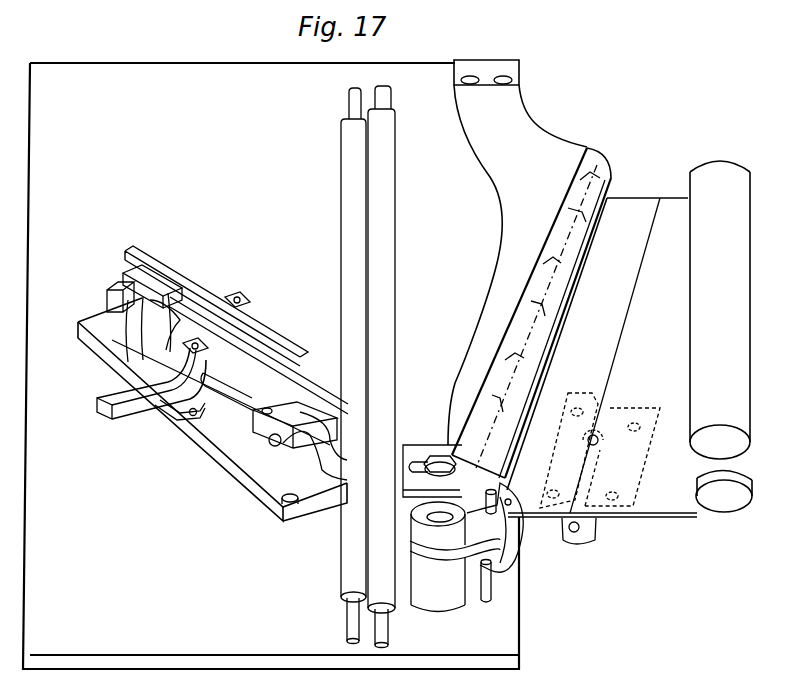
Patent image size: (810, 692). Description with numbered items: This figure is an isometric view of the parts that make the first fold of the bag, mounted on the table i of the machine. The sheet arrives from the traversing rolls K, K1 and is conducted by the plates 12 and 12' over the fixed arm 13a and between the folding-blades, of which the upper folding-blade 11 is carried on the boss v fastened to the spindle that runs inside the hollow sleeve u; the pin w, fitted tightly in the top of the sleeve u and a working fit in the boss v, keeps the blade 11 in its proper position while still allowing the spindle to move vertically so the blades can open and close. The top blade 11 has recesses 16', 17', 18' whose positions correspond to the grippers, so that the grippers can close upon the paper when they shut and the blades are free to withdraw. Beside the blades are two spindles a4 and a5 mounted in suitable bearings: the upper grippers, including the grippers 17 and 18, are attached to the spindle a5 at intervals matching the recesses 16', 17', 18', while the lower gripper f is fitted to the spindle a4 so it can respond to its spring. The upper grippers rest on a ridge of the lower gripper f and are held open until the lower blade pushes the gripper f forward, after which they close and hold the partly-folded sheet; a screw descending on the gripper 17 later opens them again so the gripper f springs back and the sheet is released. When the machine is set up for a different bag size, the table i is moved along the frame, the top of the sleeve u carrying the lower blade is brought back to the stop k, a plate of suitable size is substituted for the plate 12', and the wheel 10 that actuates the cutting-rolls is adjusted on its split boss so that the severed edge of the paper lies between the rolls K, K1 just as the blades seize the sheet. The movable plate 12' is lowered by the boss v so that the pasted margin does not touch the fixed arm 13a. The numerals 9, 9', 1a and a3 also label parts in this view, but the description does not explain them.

The table i is at (271, 366).
The guide rod 9 is at (353, 366).
The guide rod 9' is at (381, 367).
The wheel 10 is at (165, 273).
The upper gripper 17 is at (230, 371).
The spindle a5 is at (232, 393).
The upper gripper 18 is at (295, 410).
The base plate 1a is at (168, 407).
The lower gripper f is at (315, 446).
The spindle a4 is at (297, 447).
The fixed arm 13a is at (529, 269).
The recess in the top blade 16' is at (580, 197).
The recess in the top blade 17' is at (541, 286).
The recess in the top blade 18' is at (503, 382).
The plate 12 is at (602, 357).
The plate 12' is at (615, 355).
The hinge a3 is at (610, 540).
The traversing roll K is at (720, 310).
The traversing roll K1 is at (724, 491).
The folding-blade 11 is at (456, 467).
The hollow sleeve u is at (433, 517).
The boss v is at (488, 510).
The pin w is at (515, 527).
The stop k is at (488, 590).